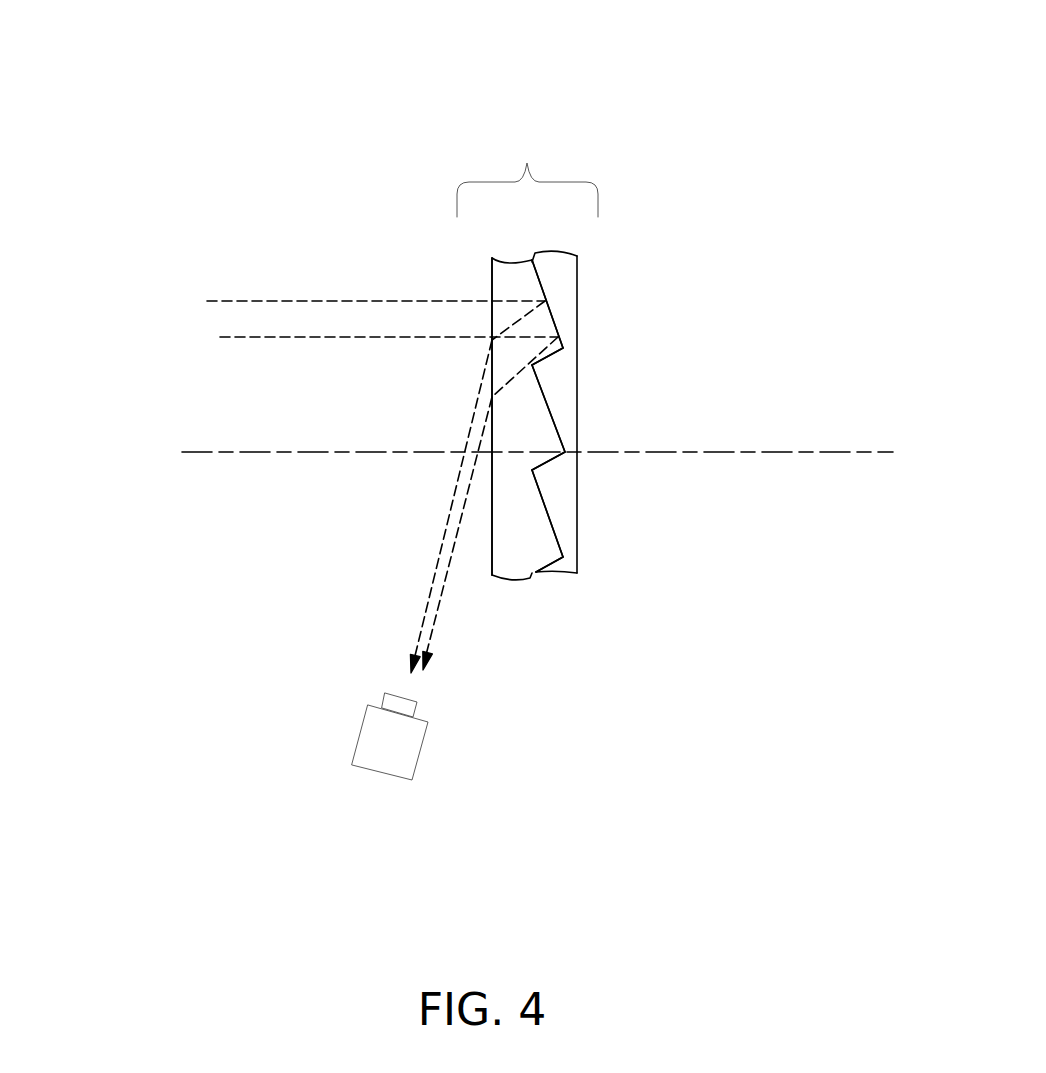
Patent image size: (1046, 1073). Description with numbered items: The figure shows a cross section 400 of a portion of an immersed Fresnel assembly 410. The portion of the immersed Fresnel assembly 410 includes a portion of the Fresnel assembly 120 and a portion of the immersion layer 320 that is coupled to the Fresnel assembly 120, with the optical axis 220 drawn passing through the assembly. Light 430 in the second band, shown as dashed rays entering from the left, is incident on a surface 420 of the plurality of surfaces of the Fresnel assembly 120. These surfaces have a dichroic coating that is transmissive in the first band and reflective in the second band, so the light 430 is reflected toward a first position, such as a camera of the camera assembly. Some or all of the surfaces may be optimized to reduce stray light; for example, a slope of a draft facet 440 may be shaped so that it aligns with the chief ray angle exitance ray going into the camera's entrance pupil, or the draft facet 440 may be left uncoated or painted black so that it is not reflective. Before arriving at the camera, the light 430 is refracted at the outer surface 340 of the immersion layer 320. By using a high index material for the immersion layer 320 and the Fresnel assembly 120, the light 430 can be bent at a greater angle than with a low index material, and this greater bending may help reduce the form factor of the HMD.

The cross section 400 is at (82, 32).
The immersed Fresnel assembly 410 is at (527, 127).
The immersion layer 320 is at (492, 270).
The light 430 is at (339, 487).
The surface 420 is at (545, 313).
The Fresnel assembly 120 is at (568, 372).
The optical axis 220 is at (571, 459).
The outer surface 340 is at (492, 508).
The draft facet 440 is at (543, 462).